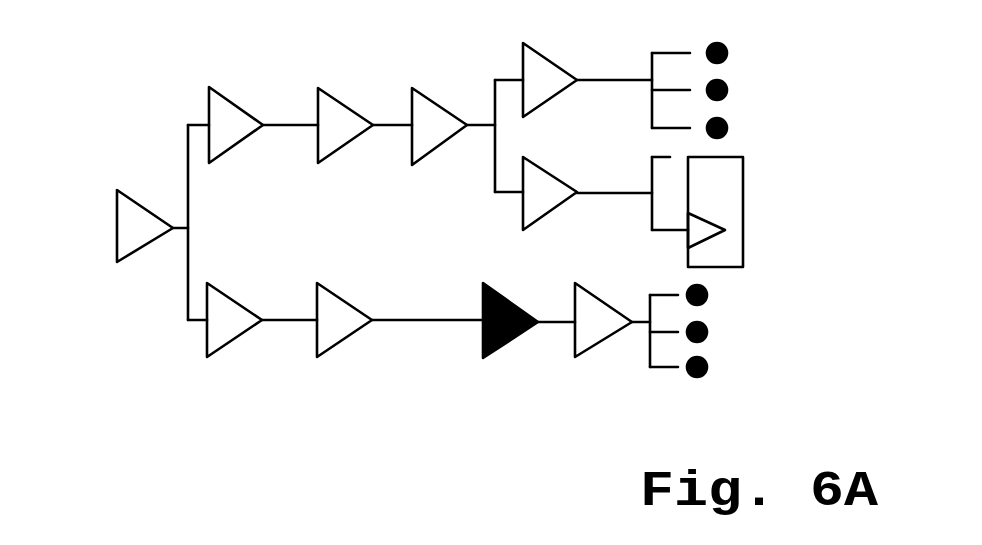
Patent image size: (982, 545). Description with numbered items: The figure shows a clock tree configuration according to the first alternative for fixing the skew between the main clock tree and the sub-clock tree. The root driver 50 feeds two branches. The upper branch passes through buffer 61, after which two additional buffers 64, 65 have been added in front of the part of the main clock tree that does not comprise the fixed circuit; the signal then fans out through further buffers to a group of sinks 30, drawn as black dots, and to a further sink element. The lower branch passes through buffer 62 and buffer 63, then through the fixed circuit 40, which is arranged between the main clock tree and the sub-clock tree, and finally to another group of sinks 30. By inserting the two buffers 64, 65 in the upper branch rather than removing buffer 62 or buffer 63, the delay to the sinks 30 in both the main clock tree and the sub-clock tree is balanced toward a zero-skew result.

The sinks 30 is at (720, 333).
The fixed circuit 40 is at (510, 348).
The root driver 50 is at (112, 225).
The buffer 61 is at (240, 100).
The buffer 62 is at (237, 342).
The buffer 63 is at (353, 342).
The buffer 64 is at (350, 100).
The buffer 65 is at (443, 100).